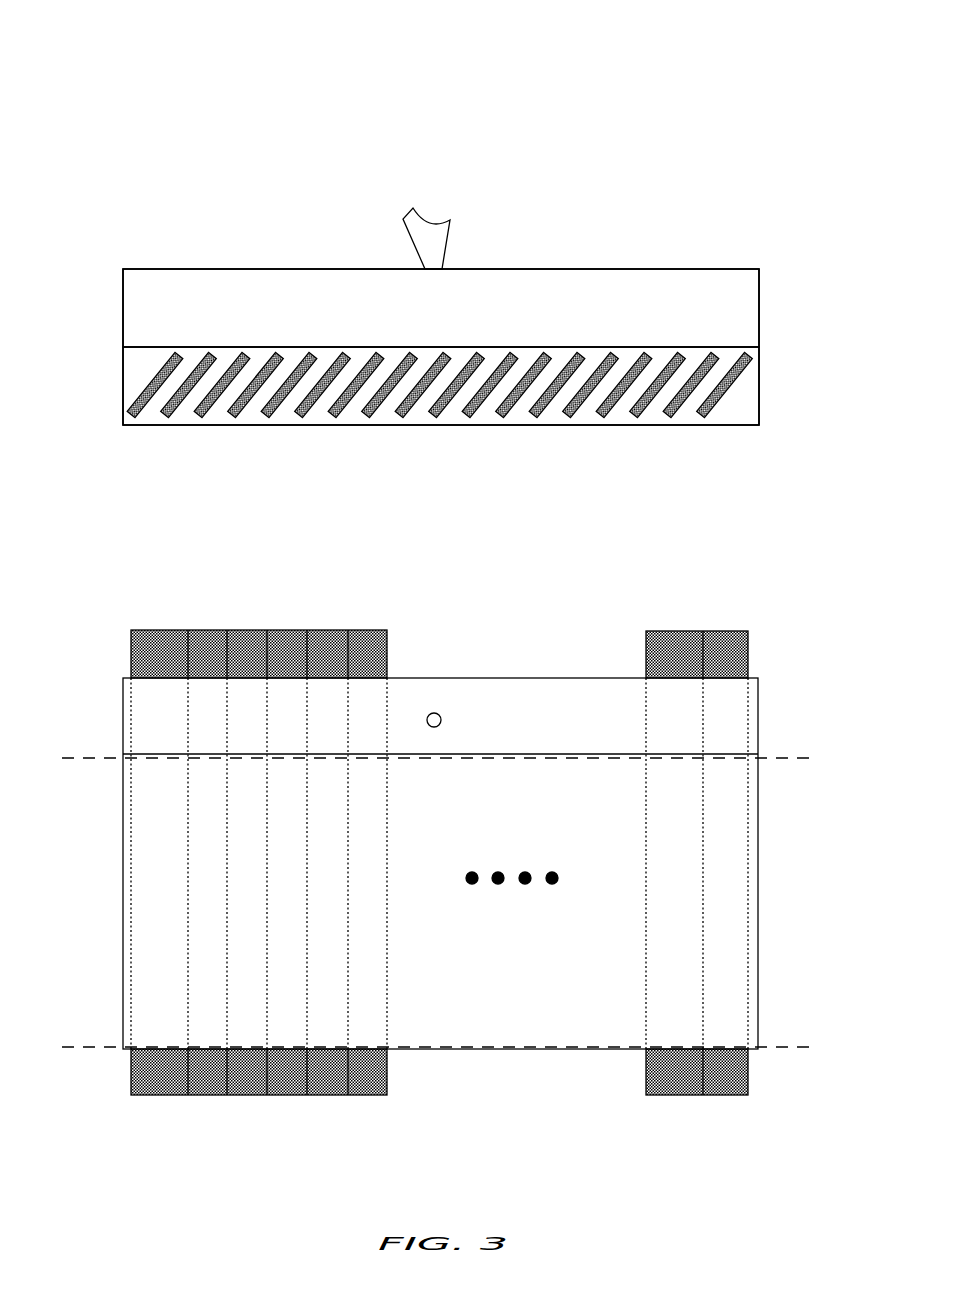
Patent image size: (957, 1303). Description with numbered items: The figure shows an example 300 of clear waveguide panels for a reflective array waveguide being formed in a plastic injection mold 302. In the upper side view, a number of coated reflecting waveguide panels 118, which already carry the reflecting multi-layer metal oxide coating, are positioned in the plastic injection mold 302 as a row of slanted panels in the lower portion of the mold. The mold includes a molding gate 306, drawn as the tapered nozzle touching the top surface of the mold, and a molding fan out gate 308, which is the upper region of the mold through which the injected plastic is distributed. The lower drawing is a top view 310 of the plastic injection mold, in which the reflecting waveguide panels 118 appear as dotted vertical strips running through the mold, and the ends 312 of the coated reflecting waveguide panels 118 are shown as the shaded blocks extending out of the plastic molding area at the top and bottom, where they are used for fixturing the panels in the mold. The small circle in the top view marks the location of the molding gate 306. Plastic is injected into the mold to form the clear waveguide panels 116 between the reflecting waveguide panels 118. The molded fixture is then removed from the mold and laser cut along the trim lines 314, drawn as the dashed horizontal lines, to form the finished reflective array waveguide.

The example of the clear waveguide panels formed in a plastic injection mold 300 is at (713, 78).
The plastic injection mold 302 is at (559, 270).
The molding gate 306 is at (433, 225).
The molding fan out gate 308 is at (323, 302).
The clear waveguide panels 116 is at (258, 403).
The coated reflecting waveguide panels 118 is at (448, 403).
The top view of the plastic injection mold 310 is at (588, 607).
The ends of the coated reflecting waveguide panels 312 is at (287, 628).
The trim lines 314 is at (831, 729).